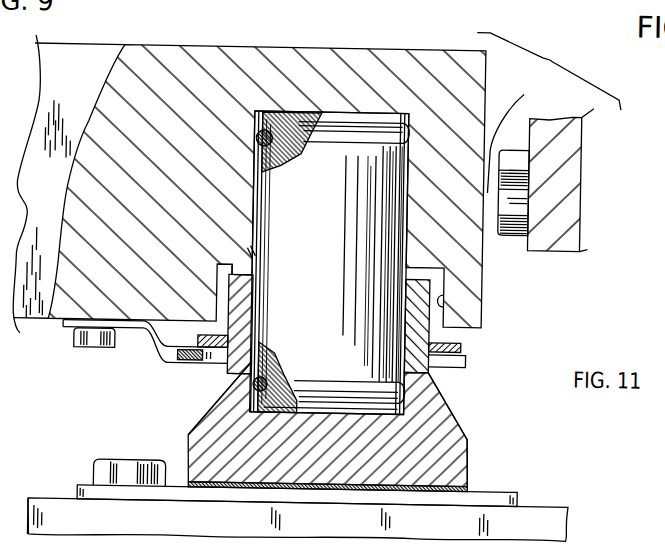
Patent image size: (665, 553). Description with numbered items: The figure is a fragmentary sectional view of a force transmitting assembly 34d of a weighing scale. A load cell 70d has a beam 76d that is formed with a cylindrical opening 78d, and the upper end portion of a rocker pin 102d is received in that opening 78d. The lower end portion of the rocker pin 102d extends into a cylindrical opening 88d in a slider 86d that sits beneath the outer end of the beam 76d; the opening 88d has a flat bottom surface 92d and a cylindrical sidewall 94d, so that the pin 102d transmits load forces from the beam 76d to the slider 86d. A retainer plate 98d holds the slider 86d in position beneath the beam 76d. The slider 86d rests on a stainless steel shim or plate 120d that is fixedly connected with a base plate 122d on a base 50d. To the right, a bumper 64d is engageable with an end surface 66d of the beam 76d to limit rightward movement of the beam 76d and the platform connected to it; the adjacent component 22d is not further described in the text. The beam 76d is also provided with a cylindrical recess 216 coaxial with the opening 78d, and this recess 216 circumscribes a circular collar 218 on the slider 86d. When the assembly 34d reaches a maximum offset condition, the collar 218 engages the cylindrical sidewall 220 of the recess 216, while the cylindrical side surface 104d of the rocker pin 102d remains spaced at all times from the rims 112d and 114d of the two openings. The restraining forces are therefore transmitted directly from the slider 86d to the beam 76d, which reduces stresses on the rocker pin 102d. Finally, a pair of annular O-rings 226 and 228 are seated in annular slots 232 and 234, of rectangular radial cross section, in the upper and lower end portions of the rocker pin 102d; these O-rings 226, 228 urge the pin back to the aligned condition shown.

The load cell 70d is at (246, 40).
The load cell beam 76d is at (292, 69).
The force transmitting assembly 34d is at (386, 29).
The cylindrical opening 78d is at (409, 103).
The end surface 66d is at (530, 84).
The bumper 64d is at (533, 195).
The mounting flange 22d is at (563, 213).
The rocker pin 102d is at (254, 200).
The rim 112d is at (254, 238).
The cylindrical side surface 104d is at (262, 263).
The rim 114d is at (250, 273).
The circular collar 218 is at (246, 309).
The cylindrical recess 216 is at (442, 310).
The cylindrical sidewall 220 is at (450, 293).
The annular slot 232 is at (277, 157).
The annular slot 234 is at (284, 372).
The O-ring 226 is at (356, 136).
The O-ring 228 is at (356, 376).
The retainer plate 98d is at (156, 354).
The cylindrical sidewall 94d is at (257, 359).
The flat bottom surface 92d is at (258, 394).
The slider 86d is at (193, 437).
The cylindrical opening 88d is at (421, 405).
The base 50d is at (66, 496).
The shim plate 120d is at (486, 484).
The base plate 122d is at (545, 498).